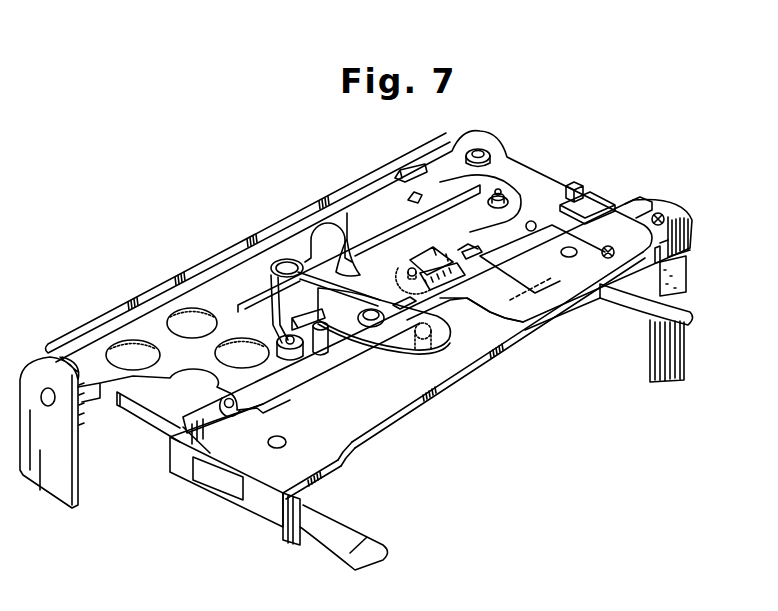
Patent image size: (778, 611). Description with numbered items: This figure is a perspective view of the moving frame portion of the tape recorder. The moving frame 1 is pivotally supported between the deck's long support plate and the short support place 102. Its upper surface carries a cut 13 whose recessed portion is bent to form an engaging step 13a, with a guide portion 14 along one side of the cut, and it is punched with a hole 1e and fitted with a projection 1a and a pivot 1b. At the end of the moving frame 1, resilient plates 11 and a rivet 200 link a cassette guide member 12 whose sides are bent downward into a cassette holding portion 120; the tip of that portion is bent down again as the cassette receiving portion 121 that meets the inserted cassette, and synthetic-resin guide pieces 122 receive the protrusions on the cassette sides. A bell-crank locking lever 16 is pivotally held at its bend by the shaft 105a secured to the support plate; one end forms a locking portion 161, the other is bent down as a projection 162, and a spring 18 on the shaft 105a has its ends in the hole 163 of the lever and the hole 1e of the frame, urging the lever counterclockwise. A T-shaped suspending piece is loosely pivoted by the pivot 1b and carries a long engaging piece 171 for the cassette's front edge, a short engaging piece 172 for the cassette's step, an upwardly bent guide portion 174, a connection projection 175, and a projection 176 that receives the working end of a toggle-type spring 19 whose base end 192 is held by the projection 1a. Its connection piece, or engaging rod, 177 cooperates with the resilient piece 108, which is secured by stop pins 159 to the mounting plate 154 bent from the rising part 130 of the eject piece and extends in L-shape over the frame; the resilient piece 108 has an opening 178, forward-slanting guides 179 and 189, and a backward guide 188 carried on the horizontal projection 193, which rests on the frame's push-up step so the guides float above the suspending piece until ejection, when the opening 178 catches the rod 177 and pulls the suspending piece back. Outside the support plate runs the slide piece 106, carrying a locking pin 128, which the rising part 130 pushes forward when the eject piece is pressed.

The moving frame 1 is at (210, 293).
The projection 1a is at (286, 350).
The pivot 1b is at (501, 193).
The hole 1e is at (403, 177).
The resilient plates 11 is at (553, 248).
The cassette guide member 12 is at (480, 348).
The cut 13 is at (255, 313).
The engaging step 13a is at (352, 251).
The guide portion 14 is at (282, 280).
The locking lever 16 is at (500, 188).
The spring 18 is at (476, 150).
The spring 19 is at (246, 300).
The support place 102 is at (58, 449).
The shaft 105a is at (481, 150).
The slide piece 106 is at (565, 220).
The resilient piece 108 is at (540, 312).
The cassette holding portion 120 is at (243, 503).
The cassette receiving portion 121 is at (128, 408).
The guide pieces 122 is at (687, 276).
The locking pin 128 is at (577, 186).
The rising part 130 is at (676, 252).
The mounting plate 154 is at (650, 204).
The stop pins 159 is at (664, 219).
The locking portion 161 is at (598, 214).
The projection 162 is at (312, 250).
The hole 163 is at (413, 193).
The engaging piece 171 is at (325, 350).
The engaging piece 172 is at (429, 352).
The guide portion 174 is at (385, 303).
The connection projection 175 is at (348, 240).
The projection 176 is at (369, 322).
The connection piece 177 is at (410, 270).
The opening 178 is at (452, 268).
The guide 179 is at (443, 291).
The guide 188 is at (470, 255).
The guide 189 is at (430, 240).
The base end 192 is at (299, 444).
The horizontal projection 193 is at (470, 255).
The rivet 200 is at (532, 221).